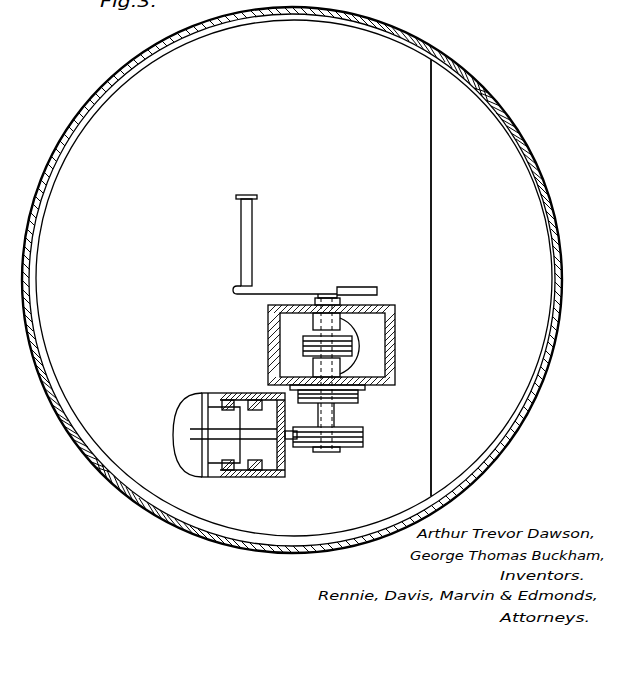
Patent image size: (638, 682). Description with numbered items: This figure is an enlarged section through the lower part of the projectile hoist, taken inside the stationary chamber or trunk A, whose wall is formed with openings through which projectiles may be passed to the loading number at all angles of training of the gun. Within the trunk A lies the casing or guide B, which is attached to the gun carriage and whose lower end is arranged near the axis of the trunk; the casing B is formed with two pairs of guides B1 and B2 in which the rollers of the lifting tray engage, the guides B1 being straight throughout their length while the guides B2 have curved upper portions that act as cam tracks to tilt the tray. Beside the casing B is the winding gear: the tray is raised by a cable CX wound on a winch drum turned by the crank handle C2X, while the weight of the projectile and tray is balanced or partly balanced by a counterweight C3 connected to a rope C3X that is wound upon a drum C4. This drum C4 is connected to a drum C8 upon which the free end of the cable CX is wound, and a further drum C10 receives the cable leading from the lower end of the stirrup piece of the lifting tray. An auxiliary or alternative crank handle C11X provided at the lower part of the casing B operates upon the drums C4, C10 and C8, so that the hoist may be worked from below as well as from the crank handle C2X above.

The stationary chamber or trunk A is at (100, 107).
The crank handle C2X is at (246, 228).
The drum C4 is at (340, 300).
The counterweight C3 is at (395, 311).
The rope C3X is at (355, 350).
The cable CX is at (390, 374).
The drum C8 is at (362, 398).
The drum C10 is at (364, 433).
The auxiliary or alternative crank handle C11X is at (298, 440).
The casing or guide B is at (286, 476).
The guides B1 is at (232, 403).
The guides B2 is at (258, 404).